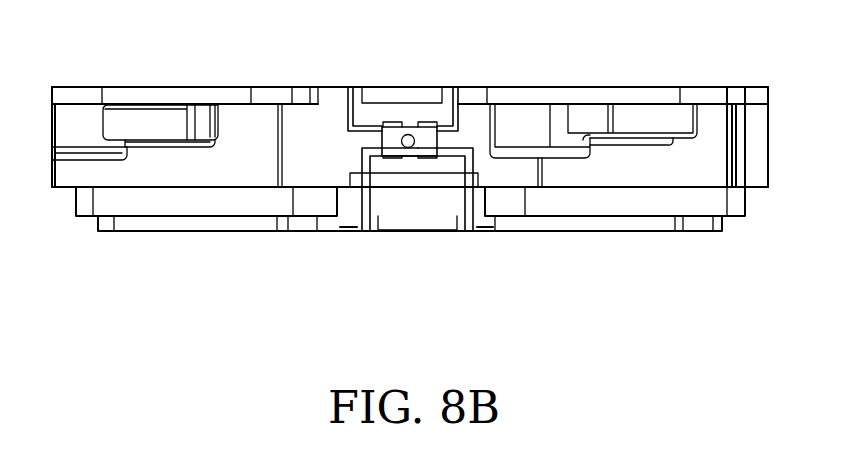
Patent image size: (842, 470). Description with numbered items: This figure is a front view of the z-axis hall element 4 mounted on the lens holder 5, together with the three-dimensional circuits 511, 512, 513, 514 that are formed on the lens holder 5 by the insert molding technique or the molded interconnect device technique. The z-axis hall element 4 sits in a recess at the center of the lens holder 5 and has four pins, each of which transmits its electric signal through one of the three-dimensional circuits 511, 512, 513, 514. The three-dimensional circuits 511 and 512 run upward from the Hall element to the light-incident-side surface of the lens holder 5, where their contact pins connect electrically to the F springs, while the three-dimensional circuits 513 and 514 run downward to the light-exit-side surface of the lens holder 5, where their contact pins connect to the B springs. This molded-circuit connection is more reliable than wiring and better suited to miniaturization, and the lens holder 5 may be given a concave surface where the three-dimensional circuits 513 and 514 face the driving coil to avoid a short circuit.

The z-axis hall element 4 is at (428, 141).
The lens holder 5 is at (582, 88).
The 3-dimensional circuit 511 is at (350, 88).
The 3-dimensional circuit 512 is at (453, 88).
The 3-dimensional circuit 513 is at (367, 230).
The 3-dimensional circuit 514 is at (463, 230).